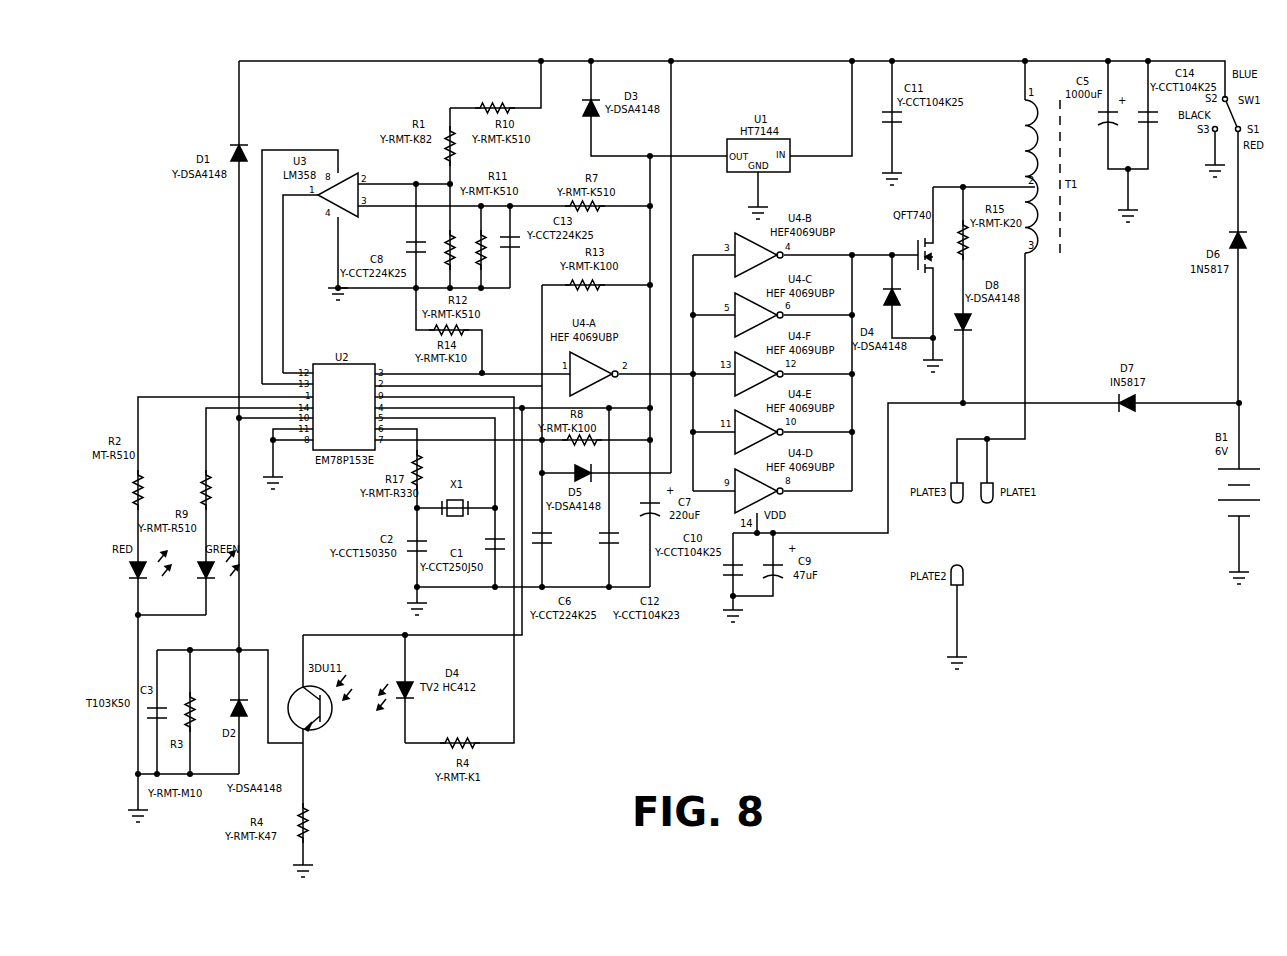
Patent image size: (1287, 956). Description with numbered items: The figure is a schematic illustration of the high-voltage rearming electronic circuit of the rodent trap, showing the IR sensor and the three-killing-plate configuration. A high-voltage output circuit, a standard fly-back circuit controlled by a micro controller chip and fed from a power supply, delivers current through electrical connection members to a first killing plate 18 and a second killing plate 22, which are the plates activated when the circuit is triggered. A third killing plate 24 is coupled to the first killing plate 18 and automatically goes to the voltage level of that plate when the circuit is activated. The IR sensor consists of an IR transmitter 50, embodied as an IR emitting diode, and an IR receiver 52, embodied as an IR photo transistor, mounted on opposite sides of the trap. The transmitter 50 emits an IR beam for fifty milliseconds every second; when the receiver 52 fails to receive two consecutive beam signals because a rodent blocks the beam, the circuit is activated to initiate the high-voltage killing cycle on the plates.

The first killing plate 18 is at (988, 504).
The second killing plate 22 is at (963, 575).
The third killing plate 24 is at (957, 504).
The IR transmitter 50 is at (430, 703).
The IR receiver 52 is at (336, 734).